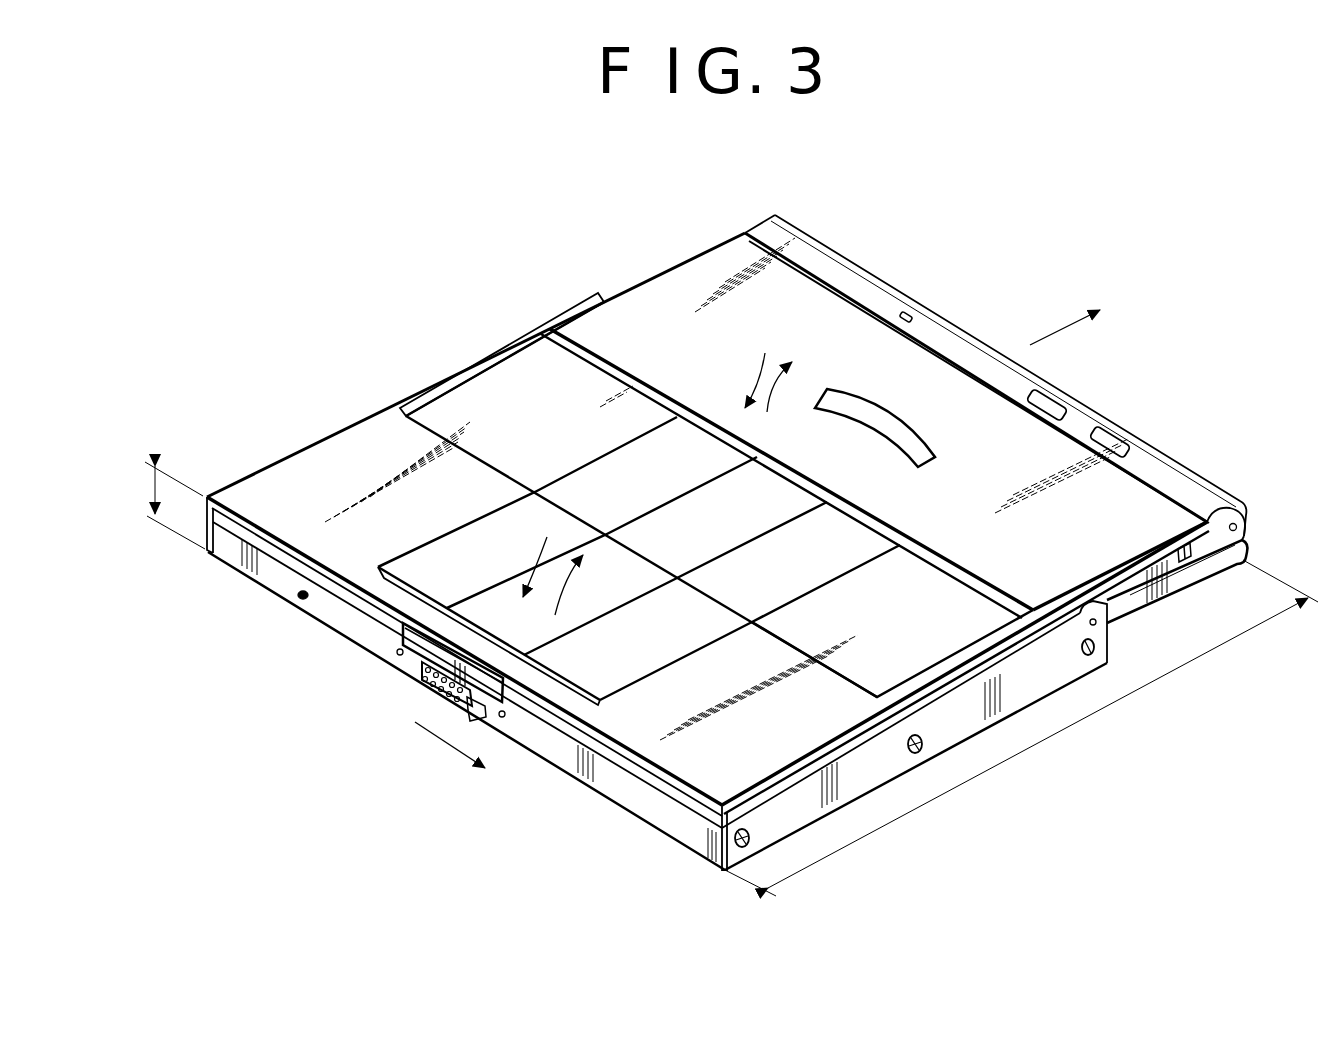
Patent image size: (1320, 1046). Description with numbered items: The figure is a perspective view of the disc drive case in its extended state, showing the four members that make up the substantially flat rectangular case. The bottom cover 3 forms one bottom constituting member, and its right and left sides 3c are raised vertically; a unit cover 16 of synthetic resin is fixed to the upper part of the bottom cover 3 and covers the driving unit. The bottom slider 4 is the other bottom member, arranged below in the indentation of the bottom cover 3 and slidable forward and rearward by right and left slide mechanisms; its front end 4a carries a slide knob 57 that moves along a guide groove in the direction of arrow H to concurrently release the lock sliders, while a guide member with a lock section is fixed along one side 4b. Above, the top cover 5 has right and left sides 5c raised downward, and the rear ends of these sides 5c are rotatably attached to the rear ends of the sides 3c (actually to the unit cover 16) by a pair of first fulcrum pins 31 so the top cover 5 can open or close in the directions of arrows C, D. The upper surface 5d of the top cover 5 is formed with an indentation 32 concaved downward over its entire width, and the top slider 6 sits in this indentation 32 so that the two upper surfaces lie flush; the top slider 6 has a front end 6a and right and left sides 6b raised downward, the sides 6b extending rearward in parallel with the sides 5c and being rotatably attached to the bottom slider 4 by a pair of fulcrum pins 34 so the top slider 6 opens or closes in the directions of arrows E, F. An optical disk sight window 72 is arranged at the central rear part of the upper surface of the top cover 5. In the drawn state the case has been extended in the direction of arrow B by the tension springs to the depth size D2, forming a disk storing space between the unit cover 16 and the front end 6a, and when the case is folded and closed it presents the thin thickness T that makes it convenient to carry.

The bottom cover 3 is at (1135, 602).
The right and left sides of the bottom cover 3c is at (1188, 580).
The bottom slider 4 is at (633, 787).
The front end of the bottom slider 4a is at (688, 822).
The one side of the bottom slider 4b is at (873, 775).
The top cover 5 is at (978, 433).
The right and left sides of the top cover 5c is at (1160, 548).
The upper surface of the top cover 5d is at (822, 305).
The top slider 6 is at (333, 543).
The front end of the top slider 6a is at (385, 603).
The right and left sides of the top slider 6b is at (513, 333).
The unit cover 16 is at (1108, 415).
The first fulcrum pins 31 is at (1240, 525).
The indentation of the top cover 32 is at (930, 590).
The fulcrum pins 34 is at (1108, 635).
The slide knob 57 is at (432, 690).
The optical disk sight window 72 is at (885, 420).
The arrow direction B is at (1077, 315).
The arrow direction C is at (752, 380).
The arrow direction D is at (777, 395).
The arrow direction E is at (535, 570).
The arrow direction F is at (568, 583).
The arrow direction H is at (465, 755).
The thickness T is at (150, 493).
The depth size D2 is at (1033, 745).